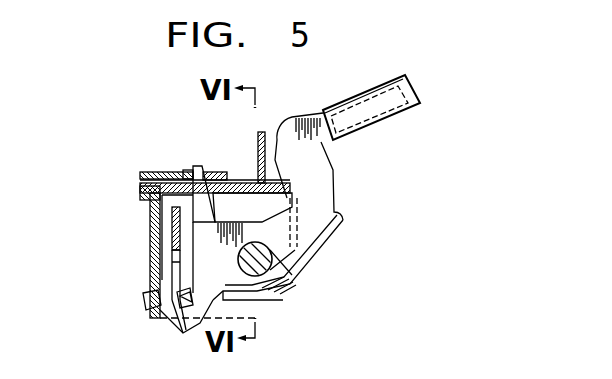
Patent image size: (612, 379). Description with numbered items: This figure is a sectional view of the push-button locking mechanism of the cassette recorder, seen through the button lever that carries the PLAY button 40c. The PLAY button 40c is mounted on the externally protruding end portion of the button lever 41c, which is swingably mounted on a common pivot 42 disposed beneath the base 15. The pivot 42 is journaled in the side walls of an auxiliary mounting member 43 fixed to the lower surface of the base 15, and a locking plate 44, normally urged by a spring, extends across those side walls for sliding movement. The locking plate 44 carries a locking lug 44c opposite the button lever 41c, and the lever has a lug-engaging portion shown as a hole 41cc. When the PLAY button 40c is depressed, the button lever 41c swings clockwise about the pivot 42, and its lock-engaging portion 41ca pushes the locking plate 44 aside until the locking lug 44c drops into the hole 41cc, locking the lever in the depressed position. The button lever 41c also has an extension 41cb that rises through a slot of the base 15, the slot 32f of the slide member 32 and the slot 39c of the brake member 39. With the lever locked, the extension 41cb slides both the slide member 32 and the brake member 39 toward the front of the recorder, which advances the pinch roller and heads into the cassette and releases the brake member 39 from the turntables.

The base 15 is at (140, 187).
The slide member 32 is at (225, 178).
The slot of the slide member 32f is at (142, 175).
The brake member 39 is at (218, 172).
The slot of the brake member 39c is at (186, 170).
The PLAY button 40c is at (418, 89).
The button lever 41c is at (202, 213).
The lock-engaging portion 41ca is at (158, 282).
The extension 41cb is at (197, 166).
The hole 41cc is at (183, 333).
The pivot 42 is at (287, 271).
The auxiliary mounting member 43 is at (151, 210).
The locking plate 44 is at (175, 230).
The locking lug 44c is at (175, 247).